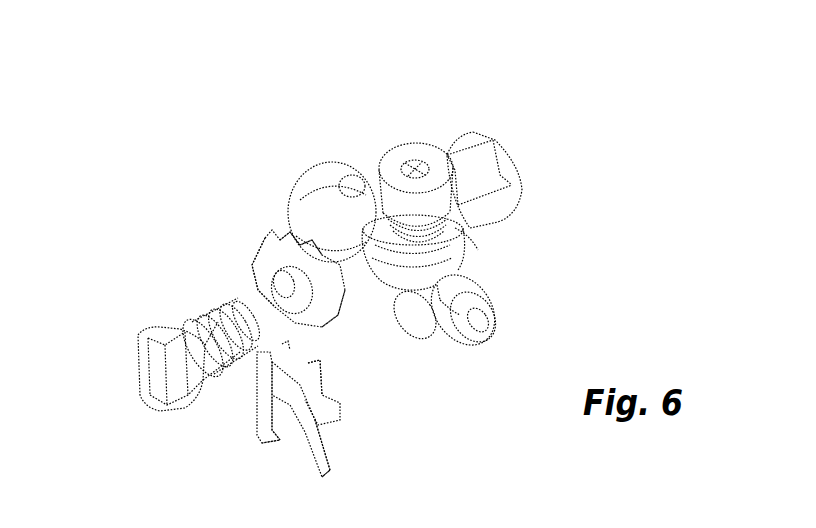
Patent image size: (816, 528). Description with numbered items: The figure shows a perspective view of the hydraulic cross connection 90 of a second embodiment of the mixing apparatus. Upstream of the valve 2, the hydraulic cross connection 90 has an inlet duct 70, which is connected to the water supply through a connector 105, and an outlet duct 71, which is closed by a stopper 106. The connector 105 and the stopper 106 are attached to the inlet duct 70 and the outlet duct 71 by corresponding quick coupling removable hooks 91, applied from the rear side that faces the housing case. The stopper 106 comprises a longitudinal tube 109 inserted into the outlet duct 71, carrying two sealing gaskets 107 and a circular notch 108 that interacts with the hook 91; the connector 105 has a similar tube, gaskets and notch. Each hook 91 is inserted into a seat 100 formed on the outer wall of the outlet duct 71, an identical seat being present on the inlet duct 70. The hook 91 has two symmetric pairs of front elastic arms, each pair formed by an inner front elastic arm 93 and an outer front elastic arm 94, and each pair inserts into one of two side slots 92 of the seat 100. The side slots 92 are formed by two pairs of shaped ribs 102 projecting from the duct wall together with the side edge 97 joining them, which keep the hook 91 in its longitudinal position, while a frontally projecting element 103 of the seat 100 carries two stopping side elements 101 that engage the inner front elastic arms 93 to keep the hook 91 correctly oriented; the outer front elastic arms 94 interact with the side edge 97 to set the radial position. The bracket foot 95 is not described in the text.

The valve 2 is at (317, 250).
The inlet duct 70 is at (457, 200).
The outlet duct 71 is at (298, 257).
The hydraulic cross connection 90 is at (532, 95).
The quick coupling removable hook 91 is at (487, 214).
The side slot 92 is at (261, 231).
The inner front elastic arm 93 is at (318, 375).
The outer front elastic arm 94 is at (338, 403).
The bracket foot 95 is at (265, 440).
The side edge 97 is at (475, 234).
The seat 100 is at (265, 200).
The stopping side element 101 is at (318, 257).
The shaped rib 102 is at (290, 250).
The frontally projecting element 103 is at (240, 140).
The connector 105 is at (489, 155).
The stopper 106 is at (163, 353).
The sealing gasket 107 is at (228, 322).
The circular notch 108 is at (215, 365).
The longitudinal tube 109 is at (226, 316).